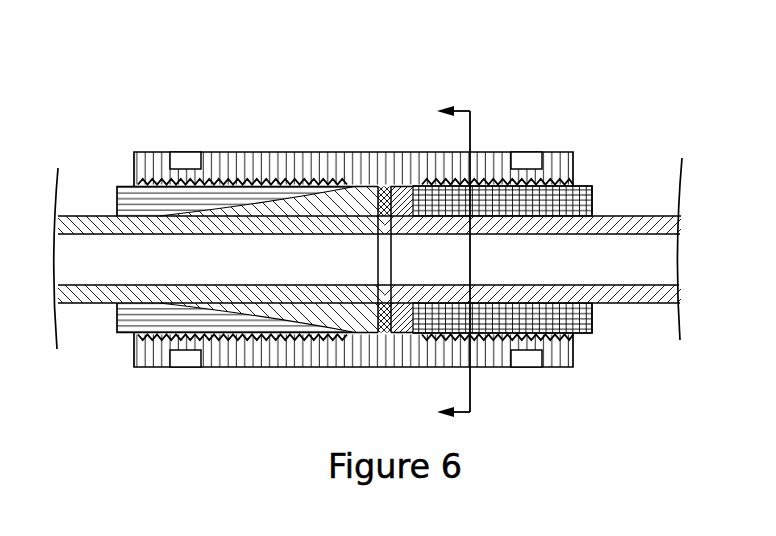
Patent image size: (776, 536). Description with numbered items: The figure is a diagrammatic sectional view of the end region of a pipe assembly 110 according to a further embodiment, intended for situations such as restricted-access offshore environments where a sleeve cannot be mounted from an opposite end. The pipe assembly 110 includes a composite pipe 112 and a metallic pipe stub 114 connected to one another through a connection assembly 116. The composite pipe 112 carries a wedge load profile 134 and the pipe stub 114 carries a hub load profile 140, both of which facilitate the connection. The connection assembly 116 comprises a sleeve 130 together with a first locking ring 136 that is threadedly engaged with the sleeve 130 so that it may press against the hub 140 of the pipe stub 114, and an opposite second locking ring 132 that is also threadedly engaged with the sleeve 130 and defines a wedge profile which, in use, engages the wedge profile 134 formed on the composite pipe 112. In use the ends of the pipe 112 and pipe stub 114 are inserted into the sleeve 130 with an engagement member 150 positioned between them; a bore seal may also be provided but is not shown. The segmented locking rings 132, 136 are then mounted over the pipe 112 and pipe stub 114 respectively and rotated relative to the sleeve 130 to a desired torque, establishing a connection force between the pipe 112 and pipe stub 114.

The pipe assembly 110 is at (150, 67).
The composite pipe 112 is at (88, 293).
The metallic pipe stub 114 is at (655, 221).
The connection assembly 116 is at (372, 75).
The sleeve 130 is at (268, 163).
The second locking ring 132 is at (135, 202).
The wedge load profile 134 is at (318, 209).
The first locking ring 136 is at (577, 198).
The hub load profile 140 is at (403, 323).
The engagement member 150 is at (382, 323).